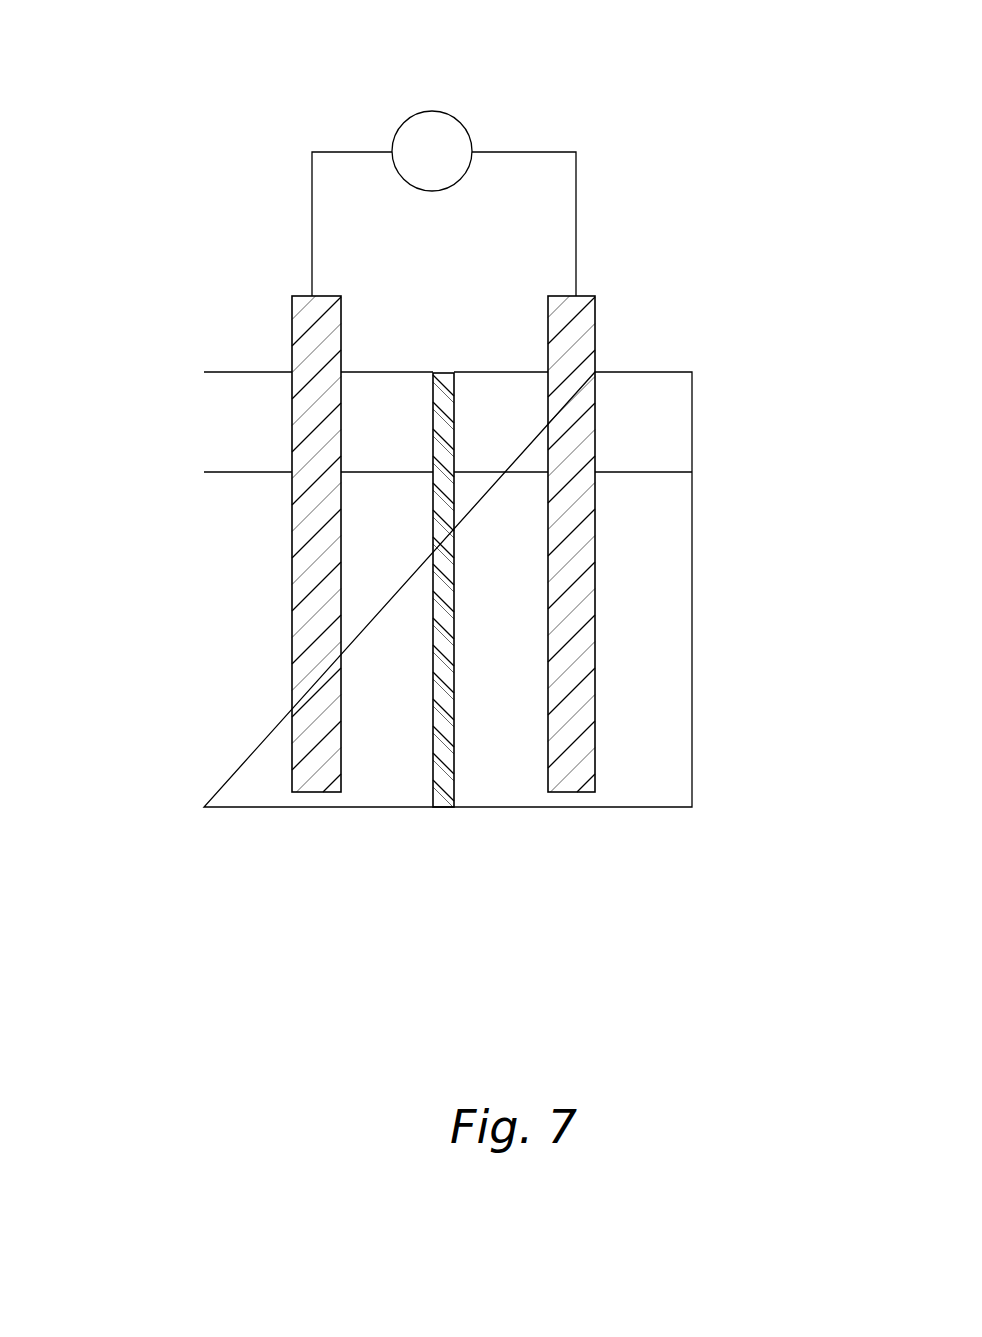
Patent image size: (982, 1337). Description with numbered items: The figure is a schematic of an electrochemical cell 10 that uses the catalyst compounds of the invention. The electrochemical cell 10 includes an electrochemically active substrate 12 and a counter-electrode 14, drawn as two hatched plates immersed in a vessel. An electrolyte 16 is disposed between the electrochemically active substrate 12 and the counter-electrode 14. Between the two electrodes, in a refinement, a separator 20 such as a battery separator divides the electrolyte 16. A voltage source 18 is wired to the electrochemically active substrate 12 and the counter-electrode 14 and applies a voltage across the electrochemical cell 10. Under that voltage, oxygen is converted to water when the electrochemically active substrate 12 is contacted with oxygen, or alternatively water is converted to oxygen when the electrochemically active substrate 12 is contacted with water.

The electrochemical cell 10 is at (672, 123).
The electrochemically active substrate 12 is at (580, 577).
The counter-electrode 14 is at (315, 533).
The electrolyte 16 is at (395, 624).
The voltage source 18 is at (420, 117).
The separator 20 is at (443, 779).